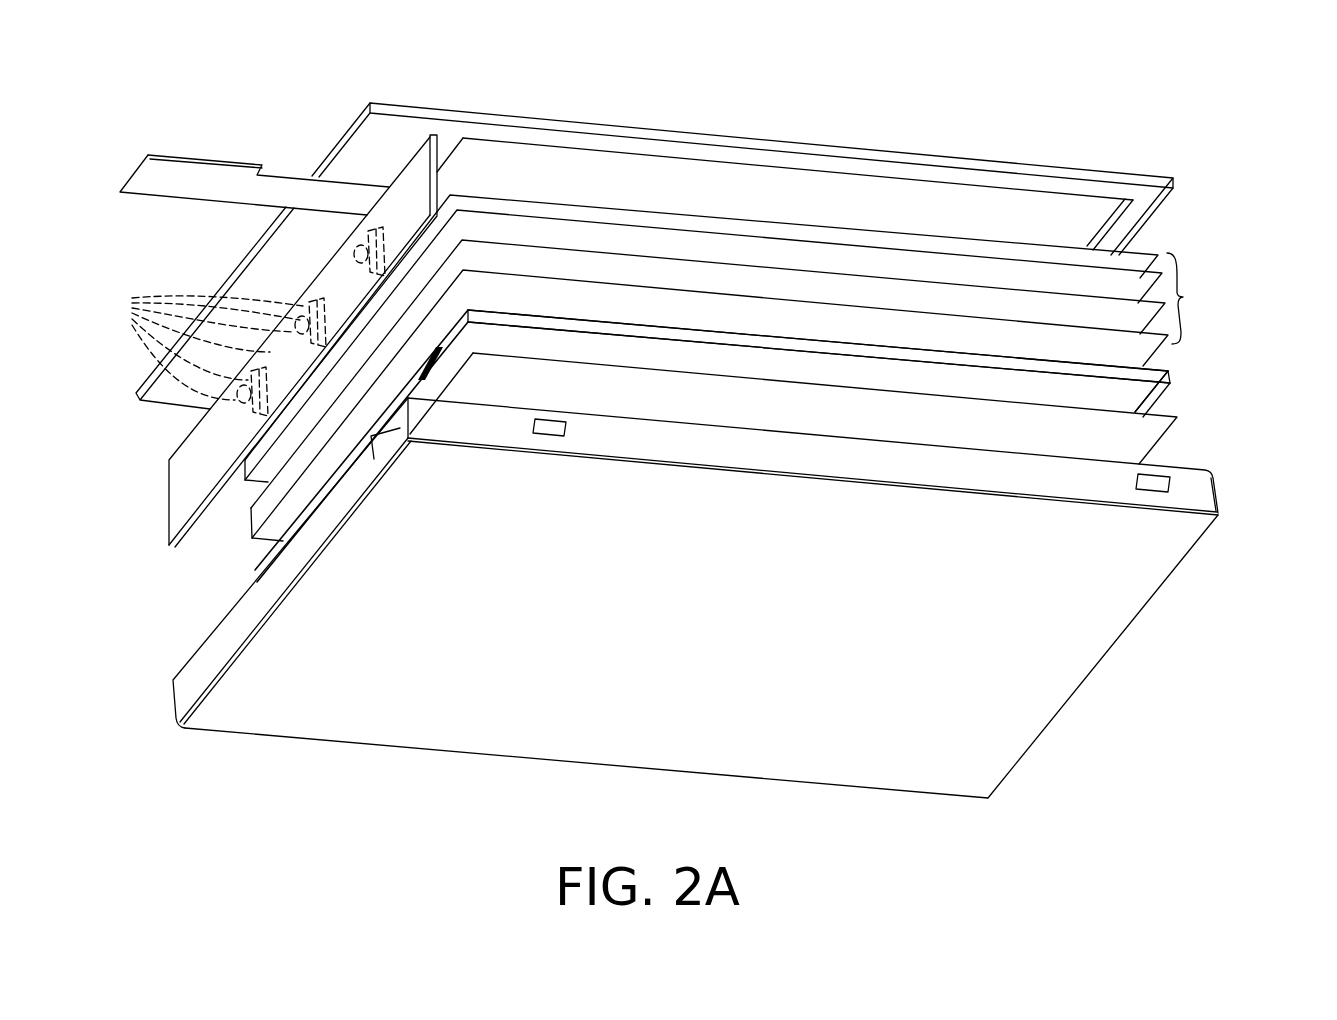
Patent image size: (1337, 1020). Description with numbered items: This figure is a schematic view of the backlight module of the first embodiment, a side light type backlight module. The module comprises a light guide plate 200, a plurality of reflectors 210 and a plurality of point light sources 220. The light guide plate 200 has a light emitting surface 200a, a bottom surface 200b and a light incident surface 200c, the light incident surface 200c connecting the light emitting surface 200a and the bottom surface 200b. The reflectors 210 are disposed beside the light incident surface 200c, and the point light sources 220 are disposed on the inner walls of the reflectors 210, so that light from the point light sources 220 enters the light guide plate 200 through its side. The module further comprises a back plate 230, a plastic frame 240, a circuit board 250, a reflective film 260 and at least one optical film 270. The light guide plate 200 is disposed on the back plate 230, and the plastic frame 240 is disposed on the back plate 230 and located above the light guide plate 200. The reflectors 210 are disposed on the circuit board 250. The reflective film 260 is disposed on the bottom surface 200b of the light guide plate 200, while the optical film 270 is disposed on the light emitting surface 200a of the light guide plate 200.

The light guide plate 200 is at (1173, 378).
The light emitting surface 200a is at (492, 296).
The bottom surface 200b is at (467, 367).
The light incident surface 200c is at (447, 336).
The reflectors 210 is at (353, 247).
The point light sources 220 is at (192, 342).
The back plate 230 is at (1077, 669).
The plastic frame 240 is at (1175, 183).
The circuit board 250 is at (203, 172).
The reflective film 260 is at (1179, 417).
The optical film 270 is at (1183, 297).